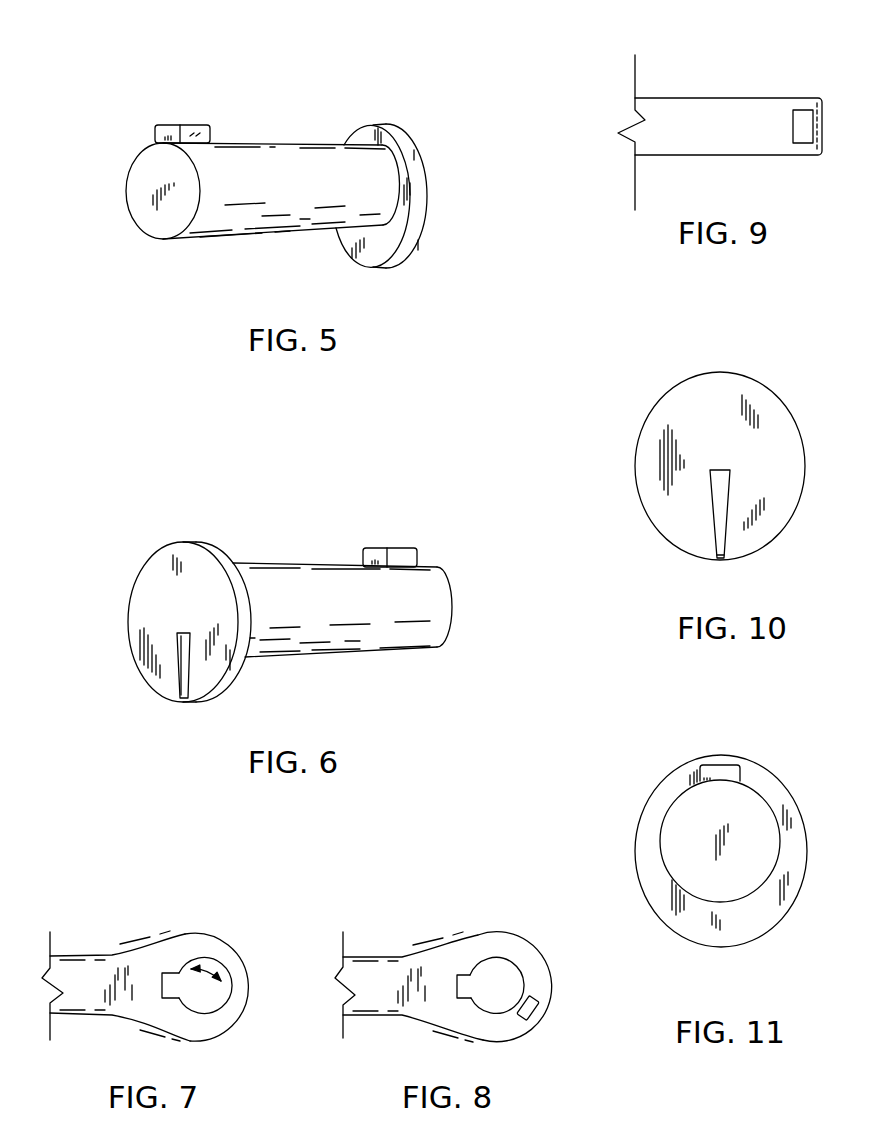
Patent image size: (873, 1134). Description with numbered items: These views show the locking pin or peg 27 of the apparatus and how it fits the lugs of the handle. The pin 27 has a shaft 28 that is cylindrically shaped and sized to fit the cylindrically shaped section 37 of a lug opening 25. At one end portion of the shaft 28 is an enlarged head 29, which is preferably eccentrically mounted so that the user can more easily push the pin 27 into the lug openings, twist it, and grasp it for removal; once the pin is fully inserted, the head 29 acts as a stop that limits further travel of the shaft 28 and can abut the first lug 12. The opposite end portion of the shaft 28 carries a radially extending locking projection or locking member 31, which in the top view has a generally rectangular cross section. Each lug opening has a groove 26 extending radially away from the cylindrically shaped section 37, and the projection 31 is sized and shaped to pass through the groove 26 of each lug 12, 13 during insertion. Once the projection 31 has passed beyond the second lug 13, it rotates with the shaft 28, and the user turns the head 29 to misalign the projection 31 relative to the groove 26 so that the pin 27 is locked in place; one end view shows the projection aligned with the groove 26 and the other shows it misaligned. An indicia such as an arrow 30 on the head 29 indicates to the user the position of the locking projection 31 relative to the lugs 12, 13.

In FIG. 8, the first lug 12 is at (443, 957).
In FIG. 7, the second lug 13 is at (202, 932).
In FIG. 8, the second lug 13 is at (512, 932).
In FIG. 7, the lug opening 25 is at (210, 970).
In FIG. 7, the groove 26 is at (168, 985).
In FIG. 8, the groove 26 is at (460, 970).
In FIG. 5, the pin 27 is at (280, 153).
In FIG. 6, the pin 27 is at (258, 587).
In FIG. 11, the pin 27 is at (711, 843).
In FIG. 5, the shaft 28 is at (302, 133).
In FIG. 6, the shaft 28 is at (310, 557).
In FIG. 9, the shaft 28 is at (707, 110).
In FIG. 8, the shaft 28 is at (483, 1002).
In FIG. 5, the head 29 is at (420, 153).
In FIG. 6, the head 29 is at (147, 563).
In FIG. 10, the head 29 is at (797, 425).
In FIG. 11, the head 29 is at (771, 926).
In FIG. 6, the arrow 30 is at (175, 697).
In FIG. 10, the arrow 30 is at (725, 537).
In FIG. 5, the locking projection 31 is at (168, 125).
In FIG. 6, the locking projection 31 is at (402, 548).
In FIG. 9, the locking projection 31 is at (805, 110).
In FIG. 11, the locking projection 31 is at (742, 773).
In FIG. 8, the locking projection 31 is at (531, 1017).
In FIG. 7, the cylindrically shaped section 37 is at (207, 987).